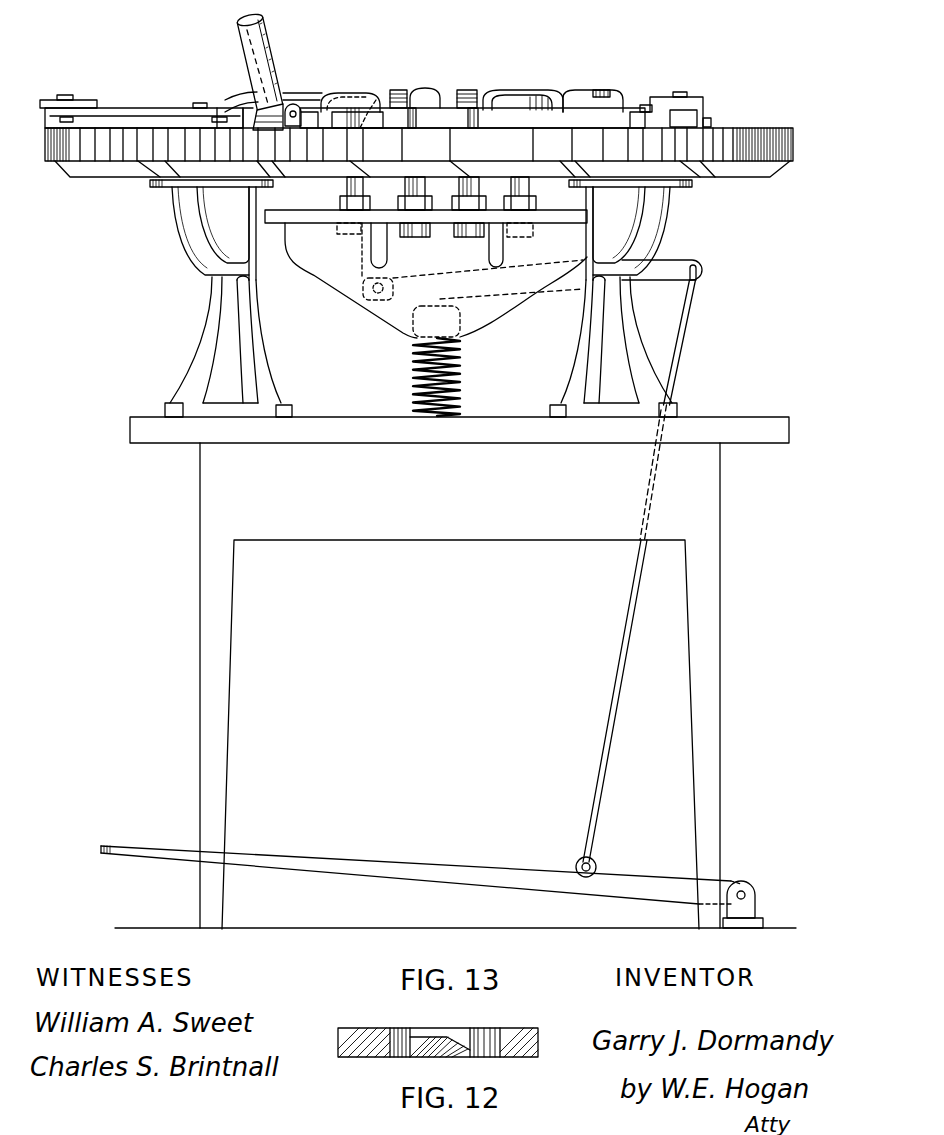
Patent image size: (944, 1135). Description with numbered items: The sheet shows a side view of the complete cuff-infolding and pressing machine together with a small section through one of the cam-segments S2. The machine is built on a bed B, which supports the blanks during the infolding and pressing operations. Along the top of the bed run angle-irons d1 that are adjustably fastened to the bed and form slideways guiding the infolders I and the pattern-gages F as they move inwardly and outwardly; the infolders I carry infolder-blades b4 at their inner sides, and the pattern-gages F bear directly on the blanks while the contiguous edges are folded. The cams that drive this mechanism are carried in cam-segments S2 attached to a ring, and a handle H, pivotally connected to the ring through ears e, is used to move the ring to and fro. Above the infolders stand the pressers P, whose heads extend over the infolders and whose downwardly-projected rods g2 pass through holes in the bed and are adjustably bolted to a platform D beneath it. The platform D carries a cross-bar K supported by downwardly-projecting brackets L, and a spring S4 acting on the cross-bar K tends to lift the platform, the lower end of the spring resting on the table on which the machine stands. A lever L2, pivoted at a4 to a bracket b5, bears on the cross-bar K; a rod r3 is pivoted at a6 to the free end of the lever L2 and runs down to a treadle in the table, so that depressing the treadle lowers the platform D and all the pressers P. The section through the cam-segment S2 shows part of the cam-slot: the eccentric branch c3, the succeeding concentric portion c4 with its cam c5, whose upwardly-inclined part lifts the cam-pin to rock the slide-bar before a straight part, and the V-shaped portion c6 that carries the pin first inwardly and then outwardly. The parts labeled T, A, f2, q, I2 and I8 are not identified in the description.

In FIG. 13, the handle H is at (250, 60).
In FIG. 13, the angle-irons d1 is at (112, 120).
In FIG. 13, the lug T is at (426, 110).
In FIG. 13, the ears e is at (247, 130).
In FIG. 13, the arch frame A is at (300, 100).
In FIG. 13, the spring member f2 is at (372, 92).
In FIG. 13, the infolders I is at (378, 130).
In FIG. 13, the pressers P is at (392, 100).
In FIG. 13, the pin q is at (404, 100).
In FIG. 13, the pattern-gages F is at (488, 104).
In FIG. 13, the bed B is at (112, 145).
In FIG. 13, the rods g2 is at (486, 190).
In FIG. 13, the infolder-blades b4 is at (410, 132).
In FIG. 13, the bracket b5 is at (348, 266).
In FIG. 13, the platform D is at (437, 226).
In FIG. 13, the brackets L is at (436, 280).
In FIG. 13, the lever L2 is at (570, 290).
In FIG. 13, the pivot a4 is at (375, 295).
In FIG. 13, the cross-bar K is at (436, 321).
In FIG. 13, the spring S4 is at (462, 358).
In FIG. 13, the pivot a6 is at (704, 268).
In FIG. 13, the rod r3 is at (684, 352).
In FIG. 13, the table I2 is at (505, 412).
In FIG. 13, the treadle I8 is at (450, 858).
In FIG. 12, the cam-segments S2 is at (375, 1028).
In FIG. 12, the eccentric branch c3 is at (505, 1028).
In FIG. 12, the concentric portion c4 is at (467, 1028).
In FIG. 12, the cam c5 is at (432, 1036).
In FIG. 12, the V-shaped portion c6 is at (396, 1058).